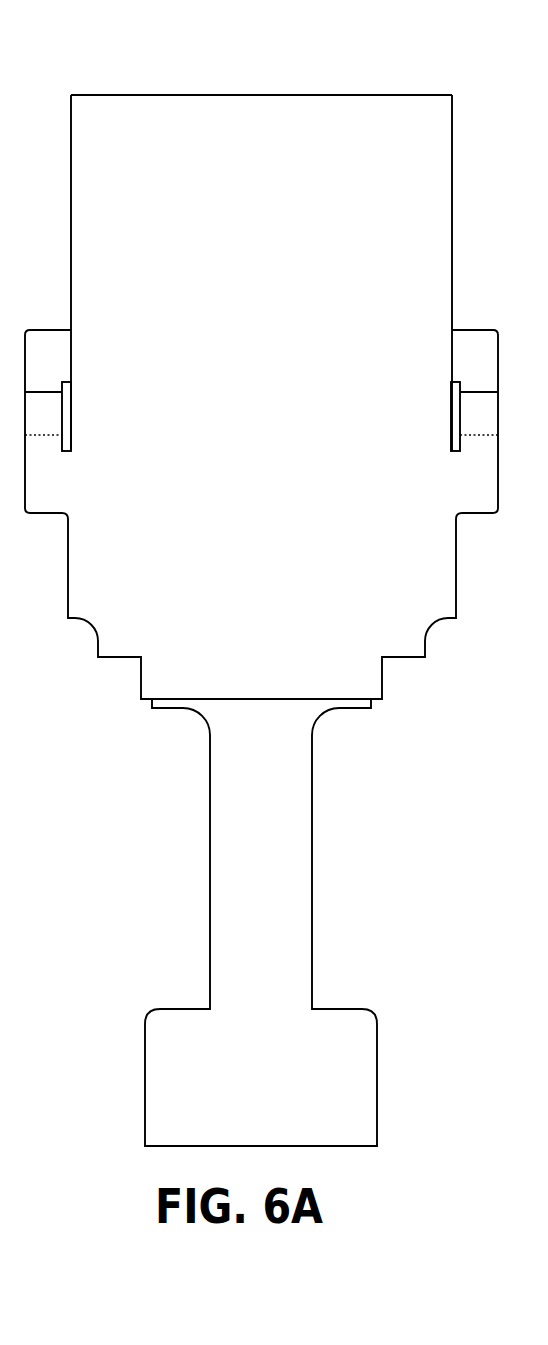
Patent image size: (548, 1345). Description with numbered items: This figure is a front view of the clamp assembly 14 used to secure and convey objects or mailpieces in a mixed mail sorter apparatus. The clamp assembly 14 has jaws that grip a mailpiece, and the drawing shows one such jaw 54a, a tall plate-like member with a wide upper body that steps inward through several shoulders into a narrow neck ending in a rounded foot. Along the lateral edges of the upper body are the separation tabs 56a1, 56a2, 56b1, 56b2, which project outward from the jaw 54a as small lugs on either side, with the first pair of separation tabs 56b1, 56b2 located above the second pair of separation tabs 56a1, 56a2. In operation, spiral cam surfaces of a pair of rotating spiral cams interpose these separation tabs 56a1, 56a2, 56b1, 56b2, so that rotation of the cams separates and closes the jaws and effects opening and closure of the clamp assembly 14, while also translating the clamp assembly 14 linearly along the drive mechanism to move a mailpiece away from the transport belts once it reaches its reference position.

The clamp assembly 14 is at (261, 573).
The jaw 54a is at (315, 118).
The separation tab 56b1 is at (49, 330).
The separation tab 56b2 is at (472, 330).
The separation tab 56a1 is at (45, 392).
The separation tab 56a2 is at (478, 392).